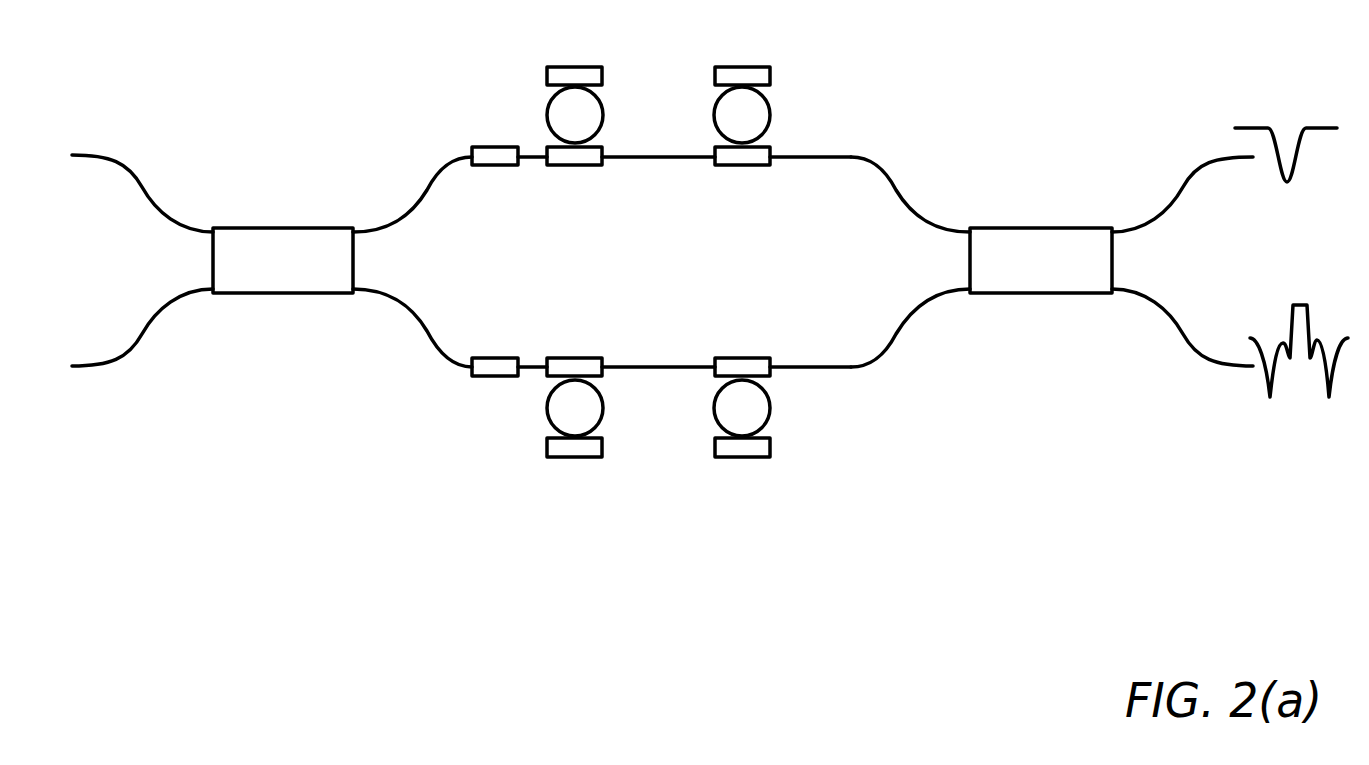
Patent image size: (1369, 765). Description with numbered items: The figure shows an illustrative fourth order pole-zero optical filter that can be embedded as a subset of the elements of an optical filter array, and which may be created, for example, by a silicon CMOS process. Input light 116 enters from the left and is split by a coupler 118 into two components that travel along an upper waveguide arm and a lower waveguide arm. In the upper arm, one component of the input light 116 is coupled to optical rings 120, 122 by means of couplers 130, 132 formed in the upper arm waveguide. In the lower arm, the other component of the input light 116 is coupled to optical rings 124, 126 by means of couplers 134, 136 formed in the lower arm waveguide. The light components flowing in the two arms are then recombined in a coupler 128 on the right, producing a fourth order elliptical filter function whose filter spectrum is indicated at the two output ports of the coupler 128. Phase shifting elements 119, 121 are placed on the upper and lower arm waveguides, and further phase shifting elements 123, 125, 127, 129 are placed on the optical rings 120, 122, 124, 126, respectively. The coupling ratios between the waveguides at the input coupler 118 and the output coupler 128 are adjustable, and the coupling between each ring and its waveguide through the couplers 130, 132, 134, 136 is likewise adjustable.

The input light 116 is at (72, 155).
The coupler 118 is at (305, 293).
The phase shifting element 119 is at (470, 152).
The optical ring 120 is at (547, 115).
The phase shifting element 121 is at (470, 372).
The optical ring 122 is at (714, 115).
The phase shifting element 123 is at (573, 67).
The optical ring 124 is at (547, 410).
The phase shifting element 125 is at (742, 67).
The optical ring 126 is at (714, 410).
The phase shifting element 127 is at (575, 457).
The coupler 128 is at (1037, 293).
The phase shifting element 129 is at (742, 457).
The coupler 130 is at (575, 165).
The coupler 132 is at (742, 165).
The coupler 134 is at (573, 358).
The coupler 136 is at (740, 358).